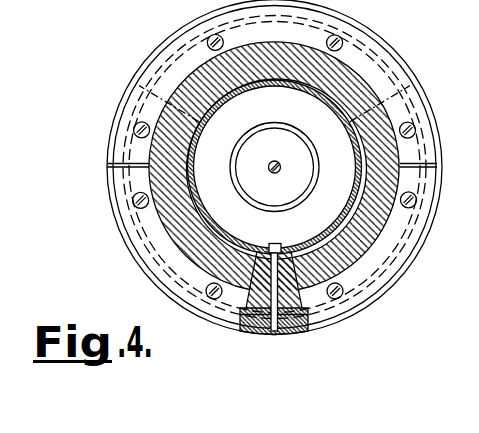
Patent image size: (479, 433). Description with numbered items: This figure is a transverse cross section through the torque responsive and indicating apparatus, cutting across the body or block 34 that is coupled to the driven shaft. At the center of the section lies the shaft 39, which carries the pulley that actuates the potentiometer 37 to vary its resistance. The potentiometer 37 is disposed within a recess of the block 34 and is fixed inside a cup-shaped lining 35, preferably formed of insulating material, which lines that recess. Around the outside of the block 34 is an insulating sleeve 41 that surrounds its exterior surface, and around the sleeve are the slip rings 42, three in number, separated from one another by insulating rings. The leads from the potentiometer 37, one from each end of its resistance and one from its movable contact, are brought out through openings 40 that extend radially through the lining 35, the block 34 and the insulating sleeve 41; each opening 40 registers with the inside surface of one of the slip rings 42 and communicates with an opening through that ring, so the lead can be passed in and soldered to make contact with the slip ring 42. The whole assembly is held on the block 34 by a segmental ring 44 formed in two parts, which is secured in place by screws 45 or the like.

The block 34 is at (333, 72).
The cup-shaped lining 35 is at (330, 224).
The potentiometer 37 is at (273, 193).
The shaft 39 is at (268, 171).
The openings 40 is at (303, 327).
The insulating sleeve 41 is at (272, 331).
The slip rings 42 is at (259, 330).
The segmental ring 44 is at (412, 245).
The screws 45 is at (418, 128).